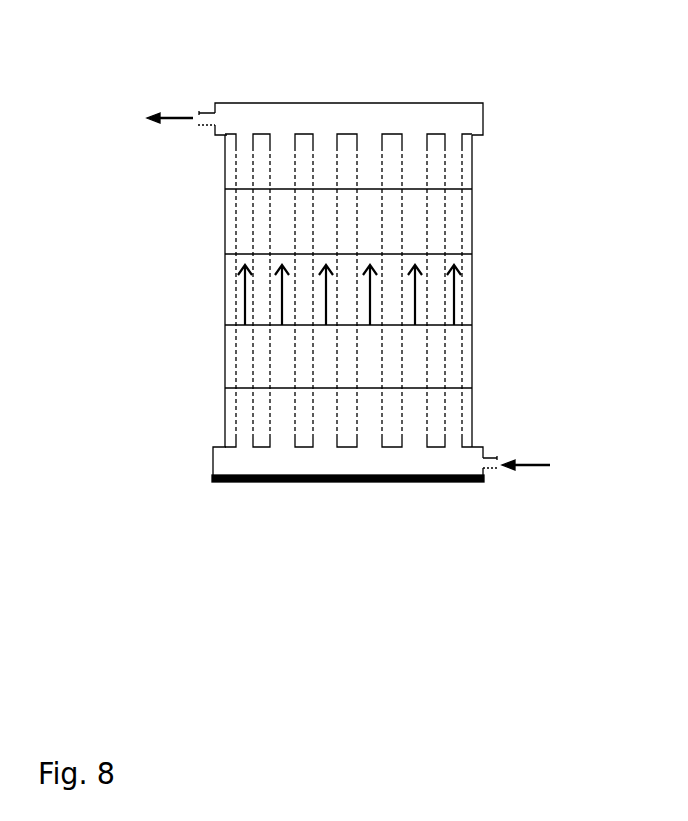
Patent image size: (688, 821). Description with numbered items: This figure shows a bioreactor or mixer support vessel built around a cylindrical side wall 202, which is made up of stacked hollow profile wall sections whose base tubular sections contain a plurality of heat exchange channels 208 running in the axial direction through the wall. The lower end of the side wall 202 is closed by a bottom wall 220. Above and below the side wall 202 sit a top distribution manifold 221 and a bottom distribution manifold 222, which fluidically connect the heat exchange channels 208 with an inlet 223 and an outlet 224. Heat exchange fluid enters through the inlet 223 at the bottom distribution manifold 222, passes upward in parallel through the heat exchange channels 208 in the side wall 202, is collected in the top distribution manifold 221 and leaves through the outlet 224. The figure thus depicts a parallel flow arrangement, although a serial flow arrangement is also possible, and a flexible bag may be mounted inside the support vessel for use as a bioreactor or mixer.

The cylindrical side wall 202 is at (138, 281).
The heat exchange channels 208 is at (372, 210).
The bottom wall 220 is at (297, 482).
The top distribution manifold 221 is at (325, 112).
The bottom distribution manifold 222 is at (400, 463).
The inlet 223 is at (487, 458).
The outlet 224 is at (210, 115).